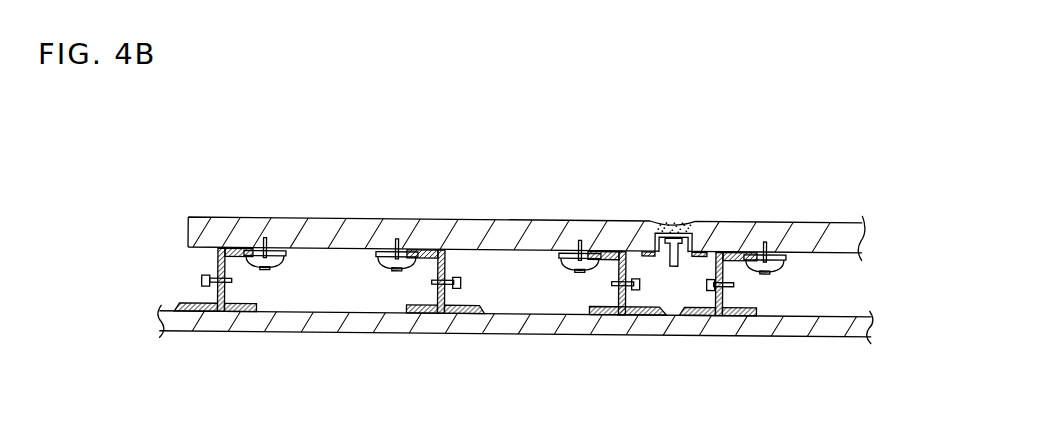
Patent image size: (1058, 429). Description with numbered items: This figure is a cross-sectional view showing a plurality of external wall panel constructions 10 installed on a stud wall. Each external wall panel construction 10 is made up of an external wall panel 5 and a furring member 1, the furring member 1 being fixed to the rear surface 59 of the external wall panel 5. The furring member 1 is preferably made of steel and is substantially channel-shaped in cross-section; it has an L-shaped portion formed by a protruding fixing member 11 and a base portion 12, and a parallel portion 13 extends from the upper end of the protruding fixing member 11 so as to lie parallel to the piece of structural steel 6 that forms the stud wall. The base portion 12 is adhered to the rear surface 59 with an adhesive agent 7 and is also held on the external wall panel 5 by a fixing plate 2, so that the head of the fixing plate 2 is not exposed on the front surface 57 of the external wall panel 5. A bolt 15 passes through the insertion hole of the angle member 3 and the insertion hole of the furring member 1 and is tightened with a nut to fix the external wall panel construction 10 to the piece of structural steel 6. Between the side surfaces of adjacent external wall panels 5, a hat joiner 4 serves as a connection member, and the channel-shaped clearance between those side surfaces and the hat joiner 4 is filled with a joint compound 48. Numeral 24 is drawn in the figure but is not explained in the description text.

The furring member 1 is at (228, 248).
The fixing plate 2 is at (295, 263).
The angle member 3 is at (197, 312).
The hat joiner 4 is at (672, 242).
The external wall panel 5 is at (207, 233).
The piece of structural steel 6 is at (843, 328).
The adhesive agent 7 is at (425, 255).
The external wall panel construction 10 is at (240, 312).
The protruding fixing member 11 is at (217, 263).
The base portion 12 is at (242, 250).
The parallel portion 13 is at (228, 312).
The bolt 15 is at (715, 258).
The pin 24 is at (265, 247).
The joint compound 48 is at (678, 222).
The front surface 57 is at (433, 250).
The rear surface 59 is at (505, 252).